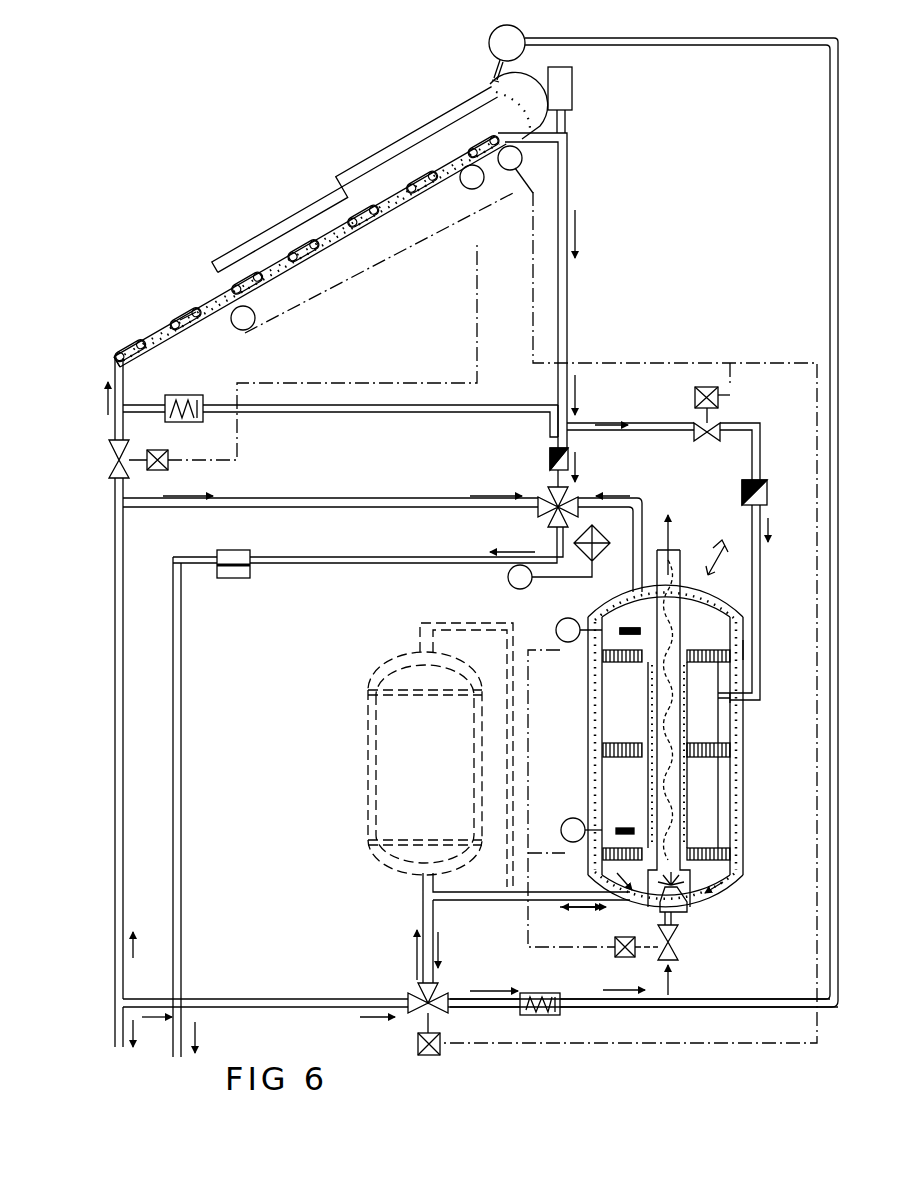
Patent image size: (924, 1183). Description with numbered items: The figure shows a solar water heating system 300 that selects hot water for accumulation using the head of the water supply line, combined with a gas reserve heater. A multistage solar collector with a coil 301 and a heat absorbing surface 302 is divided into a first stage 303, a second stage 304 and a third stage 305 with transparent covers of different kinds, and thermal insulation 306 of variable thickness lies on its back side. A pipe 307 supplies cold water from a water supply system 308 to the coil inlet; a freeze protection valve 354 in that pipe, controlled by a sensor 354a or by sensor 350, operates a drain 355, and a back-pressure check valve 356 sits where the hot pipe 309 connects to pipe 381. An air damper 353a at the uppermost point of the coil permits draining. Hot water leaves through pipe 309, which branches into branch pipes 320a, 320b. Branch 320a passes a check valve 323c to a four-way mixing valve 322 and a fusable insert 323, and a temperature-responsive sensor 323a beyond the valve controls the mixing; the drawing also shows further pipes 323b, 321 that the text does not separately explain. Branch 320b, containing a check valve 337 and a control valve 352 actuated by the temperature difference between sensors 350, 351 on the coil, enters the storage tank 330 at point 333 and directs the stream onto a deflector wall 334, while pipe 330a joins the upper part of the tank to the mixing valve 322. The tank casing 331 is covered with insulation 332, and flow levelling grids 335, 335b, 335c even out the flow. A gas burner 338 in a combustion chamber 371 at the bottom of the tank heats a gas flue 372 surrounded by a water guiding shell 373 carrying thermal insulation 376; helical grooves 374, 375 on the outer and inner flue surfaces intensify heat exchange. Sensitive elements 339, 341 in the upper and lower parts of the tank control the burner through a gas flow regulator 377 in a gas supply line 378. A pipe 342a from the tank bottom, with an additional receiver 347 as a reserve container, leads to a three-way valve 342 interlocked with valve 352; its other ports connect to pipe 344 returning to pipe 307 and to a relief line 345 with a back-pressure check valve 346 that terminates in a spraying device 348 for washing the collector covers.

The solar collector 300 is at (268, 92).
The coil 301 is at (117, 350).
The heat absorbing surface 302 is at (150, 340).
The first stage 303 is at (193, 320).
The second stage 304 is at (246, 262).
The third stage 305 is at (406, 134).
The thermal insulation 306 is at (318, 268).
The pipe 307 is at (114, 840).
The water supply system 308 is at (114, 1032).
The pipe 309 is at (568, 162).
The branch pipe 320a is at (552, 415).
The branch pipe 320b is at (645, 422).
The line 321 is at (173, 1048).
The four-way mixing control valve 322 is at (545, 490).
The fusable insert 323 is at (240, 550).
The temperature-responsive sensor 323a is at (480, 563).
The line 323b is at (318, 498).
The check valve 323c is at (548, 462).
The storage tank 330 is at (670, 699).
The pipe 330a is at (637, 500).
The casing 331 is at (735, 852).
The insulation 332 is at (735, 750).
The point 333 is at (774, 662).
The deflector wall 334 is at (780, 621).
The flow levelling grid 335 is at (780, 602).
The flow levelling grid 335b is at (730, 720).
The flow levelling grid 335c is at (735, 848).
The check valve 337 is at (770, 492).
The gas burner 338 is at (685, 912).
The sensitive element 339 is at (600, 628).
The sensitive element 341 is at (600, 845).
The three-way valve 342 is at (420, 1015).
The pipe 342a is at (505, 900).
The pipe 344 is at (312, 998).
The relief line 345 is at (640, 24).
The back-pressure check valve 346 is at (545, 993).
The additional receiver 347 is at (368, 765).
The spraying device 348 is at (490, 48).
The sensor 350 is at (512, 172).
The sensor 351 is at (248, 330).
The control valve 352 is at (712, 425).
The air damper 353a is at (573, 90).
The freeze protection valve 354 is at (104, 458).
The sensor 354a is at (470, 190).
The drain 355 is at (105, 463).
The back-pressure check valve 356 is at (183, 395).
The combustion chamber 371 is at (720, 895).
The gas flue 372 is at (670, 545).
The water guiding shell 373 is at (685, 690).
The helical groove 374 is at (655, 680).
The helical groove 375 is at (650, 735).
The thermal insulation 376 is at (640, 778).
The gas flow regulator 377 is at (678, 945).
The gas supply line 378 is at (670, 968).
The pipe 381 is at (418, 415).